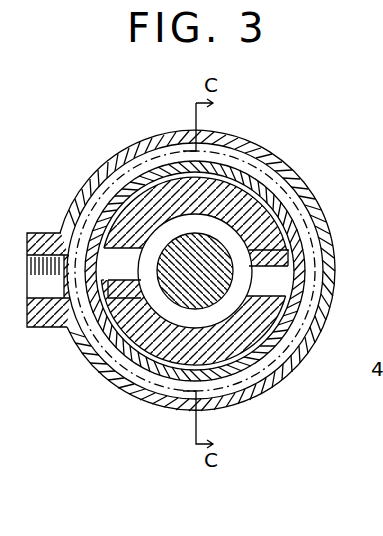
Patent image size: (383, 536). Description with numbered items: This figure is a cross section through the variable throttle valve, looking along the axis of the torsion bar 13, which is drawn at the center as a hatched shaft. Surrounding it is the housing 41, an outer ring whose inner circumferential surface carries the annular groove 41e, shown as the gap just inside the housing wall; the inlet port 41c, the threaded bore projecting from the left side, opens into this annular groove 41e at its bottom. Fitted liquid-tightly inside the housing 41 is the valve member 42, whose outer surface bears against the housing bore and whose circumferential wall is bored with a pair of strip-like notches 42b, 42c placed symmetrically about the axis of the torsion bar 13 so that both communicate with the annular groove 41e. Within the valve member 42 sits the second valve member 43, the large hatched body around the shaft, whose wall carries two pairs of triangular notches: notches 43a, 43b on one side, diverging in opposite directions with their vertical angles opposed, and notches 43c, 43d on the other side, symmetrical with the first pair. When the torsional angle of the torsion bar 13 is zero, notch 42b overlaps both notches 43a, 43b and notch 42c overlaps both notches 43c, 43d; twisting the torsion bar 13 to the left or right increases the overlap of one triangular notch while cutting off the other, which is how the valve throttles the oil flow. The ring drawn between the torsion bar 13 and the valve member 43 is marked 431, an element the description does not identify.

The torsion bar 13 is at (204, 296).
The housing 41 is at (255, 150).
The inlet port 41c is at (52, 258).
The annular groove 41e is at (121, 163).
The valve member 42 is at (303, 295).
The strip-like notch 42b is at (100, 283).
The strip-like notch 42c is at (309, 258).
The valve member 43 is at (255, 329).
The triangular notch 43a is at (110, 240).
The triangular notch 43b is at (114, 330).
The triangular notch 43c is at (260, 217).
The triangular notch 43d is at (292, 292).
The bushing 431 is at (201, 220).